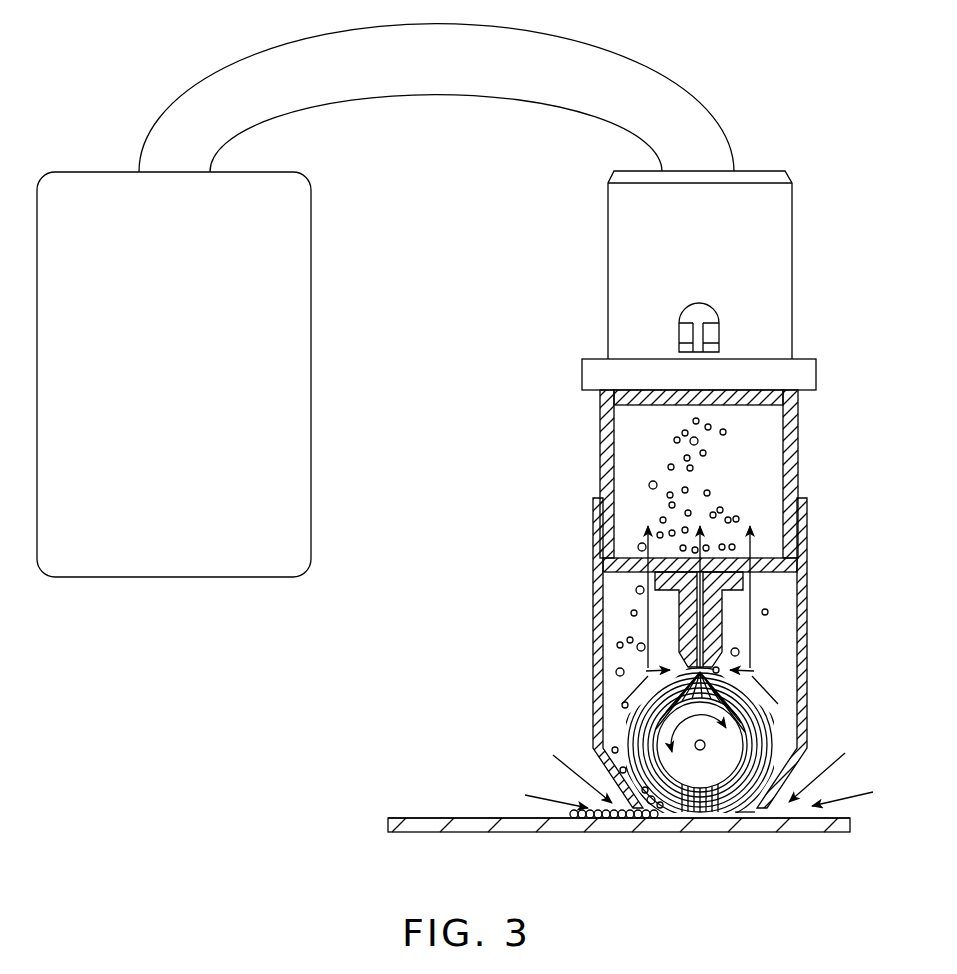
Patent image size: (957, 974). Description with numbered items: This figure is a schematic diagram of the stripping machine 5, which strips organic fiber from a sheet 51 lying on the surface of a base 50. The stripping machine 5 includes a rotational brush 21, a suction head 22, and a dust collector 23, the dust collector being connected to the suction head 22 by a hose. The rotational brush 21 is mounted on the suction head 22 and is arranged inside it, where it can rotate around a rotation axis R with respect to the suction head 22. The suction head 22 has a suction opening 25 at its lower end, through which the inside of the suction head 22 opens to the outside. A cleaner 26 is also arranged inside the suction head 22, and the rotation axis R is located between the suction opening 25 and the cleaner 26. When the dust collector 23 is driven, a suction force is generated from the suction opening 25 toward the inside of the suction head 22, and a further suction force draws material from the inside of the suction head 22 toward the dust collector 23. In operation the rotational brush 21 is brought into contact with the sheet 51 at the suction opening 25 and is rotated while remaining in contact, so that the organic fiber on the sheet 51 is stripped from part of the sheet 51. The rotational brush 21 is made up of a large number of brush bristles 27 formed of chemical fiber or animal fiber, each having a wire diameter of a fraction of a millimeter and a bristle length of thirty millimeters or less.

The stripping machine 5 is at (822, 101).
The dust collector 23 is at (288, 344).
The suction head 22 is at (811, 640).
The cleaner 26 is at (687, 618).
The rotational brush 21 is at (666, 715).
The rotation axis R is at (706, 745).
The brush bristles 27 is at (658, 820).
The suction opening 25 is at (744, 815).
The base 50 is at (546, 833).
The sheet 51 is at (485, 817).